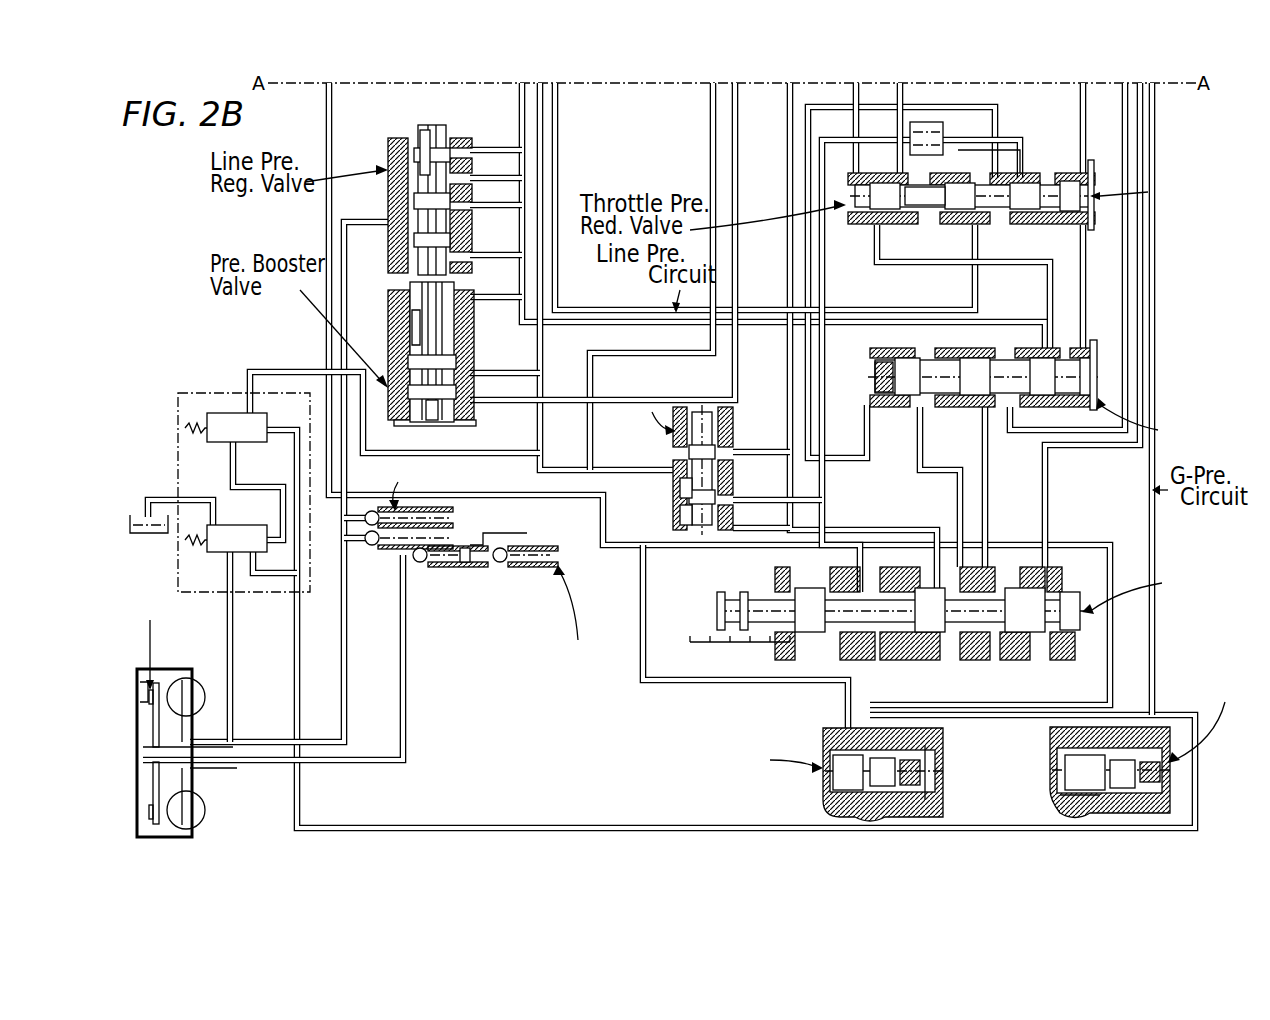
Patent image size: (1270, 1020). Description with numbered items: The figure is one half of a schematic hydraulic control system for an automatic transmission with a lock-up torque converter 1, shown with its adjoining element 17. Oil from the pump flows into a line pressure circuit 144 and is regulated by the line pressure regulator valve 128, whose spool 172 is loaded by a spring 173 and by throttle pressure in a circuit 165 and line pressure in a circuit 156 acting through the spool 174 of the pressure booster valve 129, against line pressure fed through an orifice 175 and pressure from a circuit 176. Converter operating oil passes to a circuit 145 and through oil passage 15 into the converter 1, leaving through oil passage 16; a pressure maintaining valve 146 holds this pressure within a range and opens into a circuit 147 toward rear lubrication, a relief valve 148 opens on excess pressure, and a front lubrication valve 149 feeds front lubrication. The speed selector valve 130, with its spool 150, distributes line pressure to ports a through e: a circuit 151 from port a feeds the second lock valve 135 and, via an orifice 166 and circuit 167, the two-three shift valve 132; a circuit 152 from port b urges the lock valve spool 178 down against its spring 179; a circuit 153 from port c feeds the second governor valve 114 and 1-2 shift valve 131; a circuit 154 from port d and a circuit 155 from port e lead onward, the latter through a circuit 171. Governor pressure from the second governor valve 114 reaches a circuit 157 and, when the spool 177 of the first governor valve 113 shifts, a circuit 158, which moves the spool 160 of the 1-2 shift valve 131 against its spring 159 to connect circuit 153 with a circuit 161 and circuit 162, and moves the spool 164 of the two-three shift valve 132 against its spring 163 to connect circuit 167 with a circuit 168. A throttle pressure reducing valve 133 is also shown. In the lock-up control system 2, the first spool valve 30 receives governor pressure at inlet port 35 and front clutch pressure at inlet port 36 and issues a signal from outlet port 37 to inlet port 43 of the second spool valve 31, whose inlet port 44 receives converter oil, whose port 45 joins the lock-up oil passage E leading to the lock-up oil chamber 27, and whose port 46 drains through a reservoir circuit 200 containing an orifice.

The torque converter 1 is at (163, 715).
The oil pump unit 2 is at (244, 477).
The oil passage 15 is at (198, 747).
The oil passage 16 is at (233, 742).
The pump impeller 17 is at (144, 686).
The lock-up oil chamber 27 is at (137, 738).
The first spool valve 30 is at (246, 439).
The second spool valve 31 is at (246, 551).
The inlet port 35 is at (270, 432).
The inlet port 36 is at (256, 413).
The outlet port 37 is at (230, 455).
The inlet port 43 is at (280, 540).
The inlet port 44 is at (256, 560).
The port 45 is at (230, 560).
The port 46 is at (216, 524).
The first governor valve 113 is at (1126, 735).
The second governor valve 114 is at (942, 780).
The line pressure regulator valve 128 is at (417, 185).
The pressure booster valve 129 is at (416, 364).
The speed selector valve 130 is at (955, 608).
The 1-2 shift valve 131 is at (1046, 386).
The 2-3 shift valve 132 is at (1098, 178).
The throttle pressure reducing valve 133 is at (965, 179).
The second lock valve 135 is at (675, 449).
The line pressure circuit 144 is at (543, 96).
The circuit 145 is at (357, 220).
The pressure maintaining valve 146 is at (420, 565).
The circuit 147 is at (470, 565).
The relief valve 148 is at (520, 568).
The front lubrication valve 149 is at (445, 512).
The spool 150 is at (798, 592).
The circuit 151 is at (822, 143).
The circuit 152 is at (733, 452).
The circuit 153 is at (329, 97).
The circuit 154 is at (1140, 94).
The circuit 155 is at (985, 440).
The circuit 156 is at (920, 107).
The circuit 157 is at (990, 715).
The circuit 158 is at (1083, 96).
The spring 159 is at (870, 405).
The spool 160 is at (1100, 390).
The circuit 161 is at (935, 345).
The circuit 162 is at (556, 119).
The spring 163 is at (940, 225).
The spool 164 is at (1075, 225).
The circuit 165 is at (713, 96).
The orifice 166 is at (943, 135).
The circuit 167 is at (990, 175).
The circuit 168 is at (560, 142).
The circuit 171 is at (1150, 116).
The spool 172 is at (430, 125).
The spring 173 is at (405, 340).
The spool 174 is at (410, 427).
The orifice 175 is at (510, 178).
The circuit 176 is at (520, 95).
The spool 177 is at (1060, 795).
The spool 178 is at (680, 484).
The spring 179 is at (682, 512).
The reservoir circuit 200 is at (152, 515).
The lock-up oil passage E is at (210, 770).